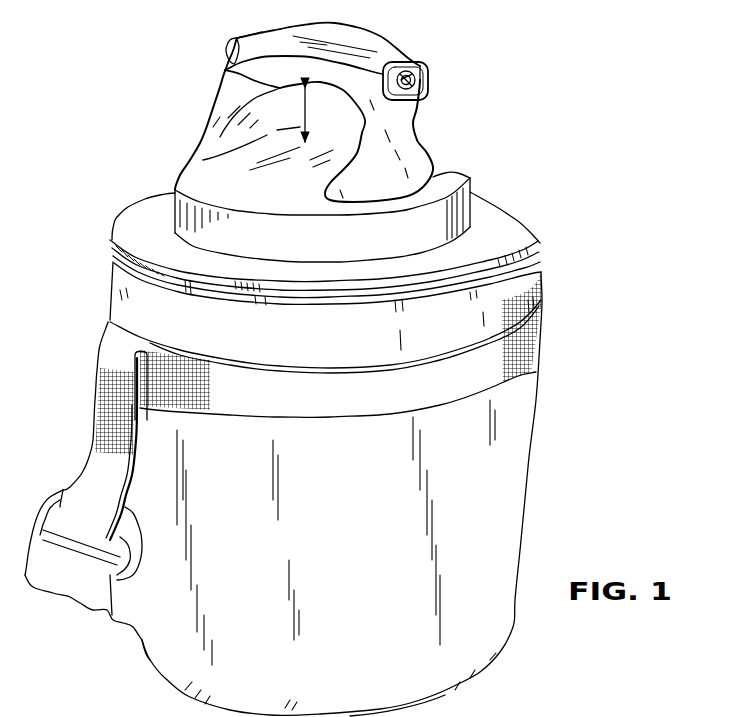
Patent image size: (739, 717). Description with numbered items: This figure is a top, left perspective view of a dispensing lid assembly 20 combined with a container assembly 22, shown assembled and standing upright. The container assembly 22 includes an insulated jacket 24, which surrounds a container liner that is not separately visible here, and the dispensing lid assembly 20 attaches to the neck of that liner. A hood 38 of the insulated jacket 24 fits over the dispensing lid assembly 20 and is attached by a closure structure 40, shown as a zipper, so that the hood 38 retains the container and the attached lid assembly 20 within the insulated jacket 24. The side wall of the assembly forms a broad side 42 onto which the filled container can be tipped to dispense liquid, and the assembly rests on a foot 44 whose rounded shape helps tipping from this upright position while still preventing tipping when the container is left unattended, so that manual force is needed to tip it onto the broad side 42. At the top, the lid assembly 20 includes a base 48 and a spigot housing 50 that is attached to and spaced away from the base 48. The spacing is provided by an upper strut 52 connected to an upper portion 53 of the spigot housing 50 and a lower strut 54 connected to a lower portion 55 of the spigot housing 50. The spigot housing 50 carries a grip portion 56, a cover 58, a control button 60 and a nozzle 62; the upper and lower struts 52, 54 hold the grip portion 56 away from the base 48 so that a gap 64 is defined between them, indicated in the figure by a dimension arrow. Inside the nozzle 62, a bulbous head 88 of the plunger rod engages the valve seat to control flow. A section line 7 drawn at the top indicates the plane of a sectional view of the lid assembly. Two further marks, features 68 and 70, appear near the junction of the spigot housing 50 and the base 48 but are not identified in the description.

The section line indicator 7 is at (155, 57).
The dispensing lid assembly 20 is at (125, 127).
The container assembly 22 is at (552, 406).
The insulated jacket 24 is at (500, 467).
The hood 38 is at (510, 224).
The closure structure 40 is at (540, 243).
The broad side 42 is at (395, 641).
The foot 44 is at (443, 690).
The base 48 is at (170, 210).
The spigot housing 50 is at (365, 33).
The upper strut 52 is at (210, 121).
The upper portion 53 is at (214, 97).
The lower strut 54 is at (410, 150).
The lower portion 55 is at (393, 125).
The grip portion 56 is at (225, 71).
The cover 58 is at (288, 38).
The control button 60 is at (237, 38).
The nozzle 62 is at (428, 75).
The gap 64 is at (307, 100).
The handle collar 68 is at (172, 190).
The handle base 70 is at (203, 172).
The bulbous head 88 is at (427, 84).